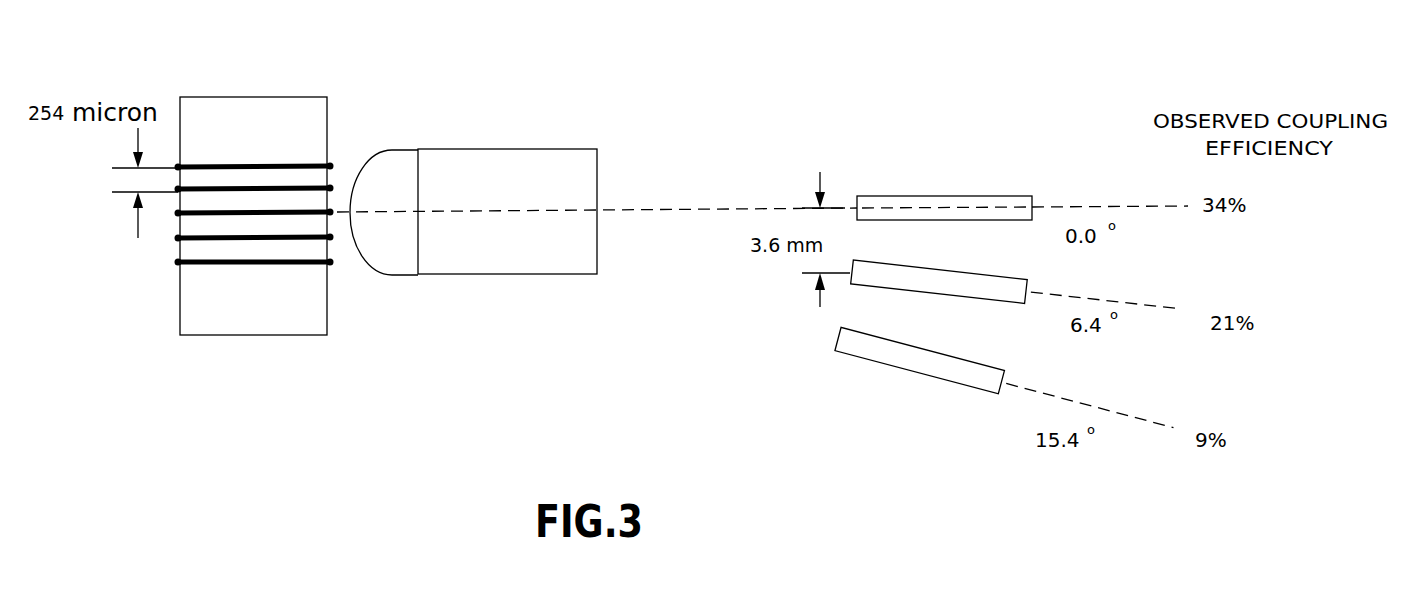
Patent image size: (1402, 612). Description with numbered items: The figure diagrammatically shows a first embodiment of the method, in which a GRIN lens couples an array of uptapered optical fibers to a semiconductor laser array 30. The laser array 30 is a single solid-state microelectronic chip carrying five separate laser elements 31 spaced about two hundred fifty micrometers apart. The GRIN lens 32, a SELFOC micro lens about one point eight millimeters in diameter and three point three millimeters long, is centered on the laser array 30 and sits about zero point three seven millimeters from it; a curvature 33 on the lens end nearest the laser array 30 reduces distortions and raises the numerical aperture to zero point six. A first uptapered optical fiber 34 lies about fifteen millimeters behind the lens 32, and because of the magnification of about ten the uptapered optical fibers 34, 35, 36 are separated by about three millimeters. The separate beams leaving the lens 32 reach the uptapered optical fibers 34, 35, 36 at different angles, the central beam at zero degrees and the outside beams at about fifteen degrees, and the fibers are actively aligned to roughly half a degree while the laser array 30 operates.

The semiconductor laser array 30 is at (590, 104).
The laser elements 31 is at (328, 165).
The GRIN lens 32 is at (518, 148).
The curvature 33 is at (389, 151).
The first uptapered optical fiber 34 is at (930, 196).
The uptapered optical fiber 35 is at (974, 247).
The uptapered optical fiber 36 is at (973, 337).